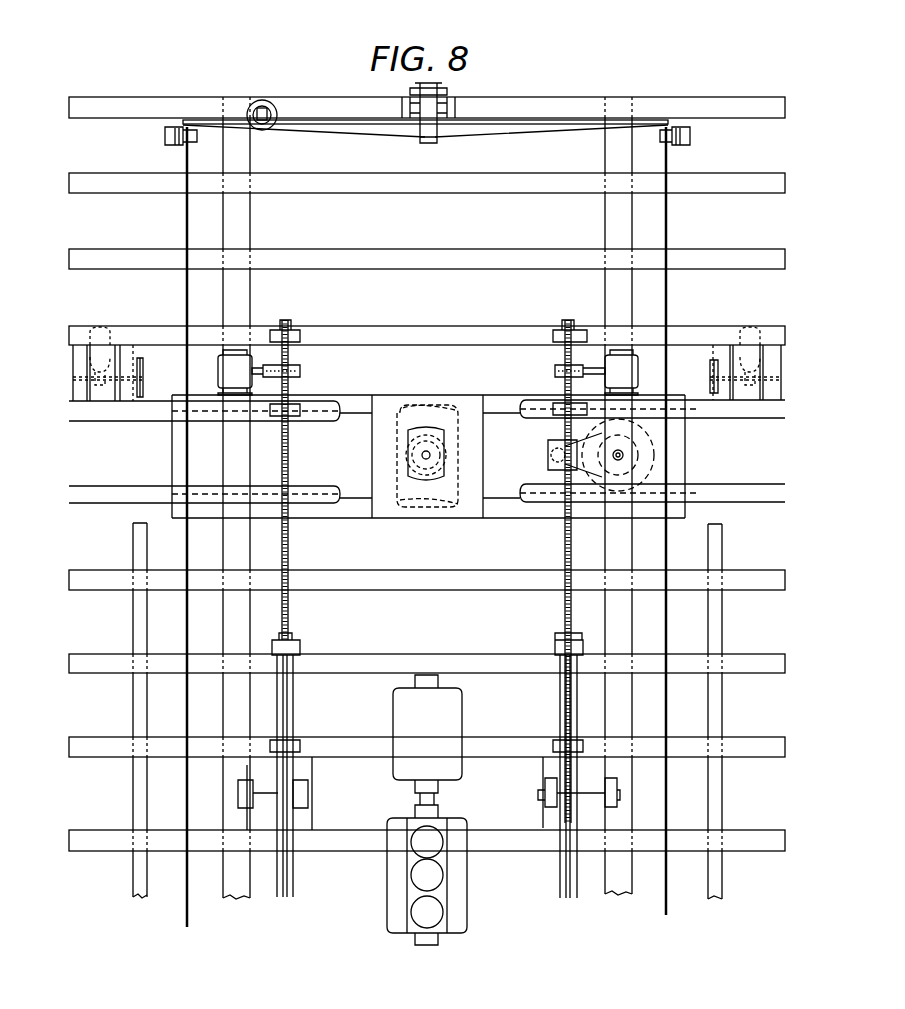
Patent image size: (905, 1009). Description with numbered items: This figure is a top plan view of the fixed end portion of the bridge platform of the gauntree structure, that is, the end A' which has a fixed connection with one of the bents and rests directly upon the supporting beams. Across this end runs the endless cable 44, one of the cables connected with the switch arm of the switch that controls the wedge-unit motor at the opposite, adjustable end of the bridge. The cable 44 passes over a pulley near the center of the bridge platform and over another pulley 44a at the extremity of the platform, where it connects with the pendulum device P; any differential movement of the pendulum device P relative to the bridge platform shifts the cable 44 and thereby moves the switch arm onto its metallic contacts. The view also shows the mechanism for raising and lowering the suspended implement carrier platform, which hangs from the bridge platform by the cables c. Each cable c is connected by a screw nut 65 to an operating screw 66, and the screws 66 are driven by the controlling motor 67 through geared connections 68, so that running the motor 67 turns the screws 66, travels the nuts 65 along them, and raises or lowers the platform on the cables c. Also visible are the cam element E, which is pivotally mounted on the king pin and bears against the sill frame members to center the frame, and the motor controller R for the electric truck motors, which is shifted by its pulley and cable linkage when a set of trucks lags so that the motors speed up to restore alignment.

The endless cable 44 is at (185, 457).
The pulley 44a is at (710, 155).
The pendulum device P is at (320, 120).
The fixed end of the bridge A' is at (702, 222).
The screw nut 65 is at (297, 652).
The operating screw 66 is at (291, 550).
The controlling motor 67 is at (232, 378).
The geared connections 68 is at (300, 372).
The cam element E is at (452, 458).
The motor controller R is at (552, 455).
The cable c is at (276, 880).